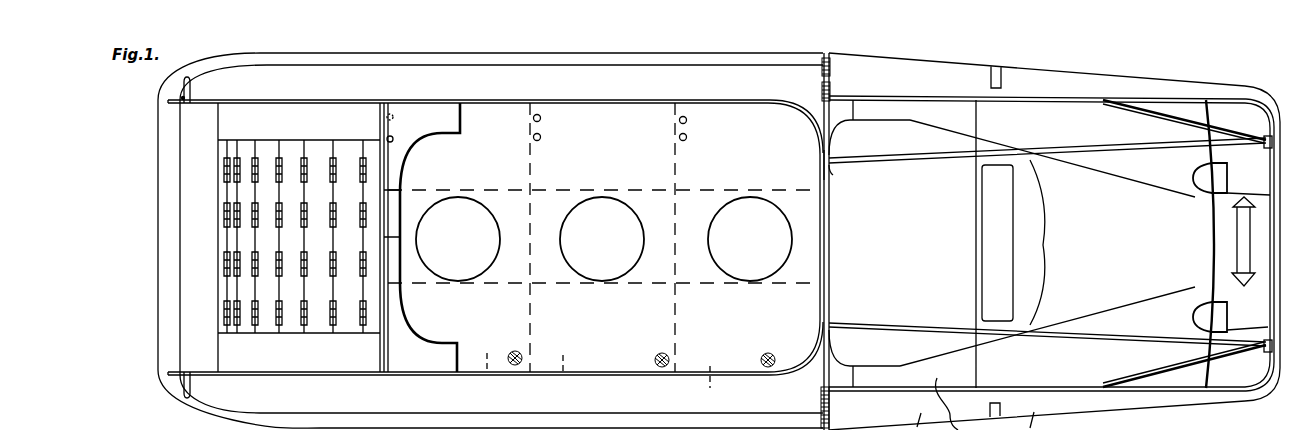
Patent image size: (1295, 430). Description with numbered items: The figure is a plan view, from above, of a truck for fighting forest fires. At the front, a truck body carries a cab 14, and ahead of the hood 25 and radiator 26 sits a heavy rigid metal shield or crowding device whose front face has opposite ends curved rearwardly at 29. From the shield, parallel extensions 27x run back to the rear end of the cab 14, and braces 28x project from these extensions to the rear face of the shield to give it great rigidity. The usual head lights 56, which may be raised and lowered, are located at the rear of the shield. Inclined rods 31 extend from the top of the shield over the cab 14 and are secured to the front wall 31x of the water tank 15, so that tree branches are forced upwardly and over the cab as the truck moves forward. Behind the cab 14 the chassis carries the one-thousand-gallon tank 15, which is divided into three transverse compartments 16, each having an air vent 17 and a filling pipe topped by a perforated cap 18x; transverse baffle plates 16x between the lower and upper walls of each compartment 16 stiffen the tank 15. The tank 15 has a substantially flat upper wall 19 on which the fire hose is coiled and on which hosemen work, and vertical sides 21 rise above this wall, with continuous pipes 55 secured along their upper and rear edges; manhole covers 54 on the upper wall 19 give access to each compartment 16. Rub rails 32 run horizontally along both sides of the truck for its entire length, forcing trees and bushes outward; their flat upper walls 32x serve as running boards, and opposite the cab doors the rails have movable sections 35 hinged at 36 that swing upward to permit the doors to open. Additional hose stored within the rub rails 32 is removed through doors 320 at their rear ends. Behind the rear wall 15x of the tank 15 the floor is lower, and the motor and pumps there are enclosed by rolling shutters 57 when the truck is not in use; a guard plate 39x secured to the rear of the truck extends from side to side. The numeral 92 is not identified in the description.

The cab 14 is at (942, 229).
The water tank 15 is at (597, 377).
The rear wall of tank 15x is at (382, 352).
The compartment 16 is at (605, 378).
The transverse baffle plate 16x is at (428, 189).
The air vent 17 is at (395, 138).
The perforated cap 18x is at (522, 355).
The upper wall 19 is at (605, 120).
The vertical side 21 is at (660, 104).
The hood 25 is at (1080, 315).
The radiator 26 is at (1195, 290).
The parallel extension 27x is at (1060, 98).
The brace 28x is at (1170, 372).
The rearwardly curved end 29 is at (1276, 107).
The inclined rod 31 is at (1085, 150).
The front wall of tank 31x is at (826, 178).
The rub rail 32 is at (308, 429).
The upper wall of rub rail 32x is at (240, 83).
The movable section 35 is at (908, 70).
The hinge 36 is at (840, 67).
The guard plate 39x is at (165, 193).
The manhole cover 54 is at (468, 213).
The continuous pipe 55 is at (483, 102).
The head light 56 is at (1195, 178).
The rolling shutter 57 is at (232, 282).
The hole 92 is at (393, 112).
The door 320 is at (183, 86).